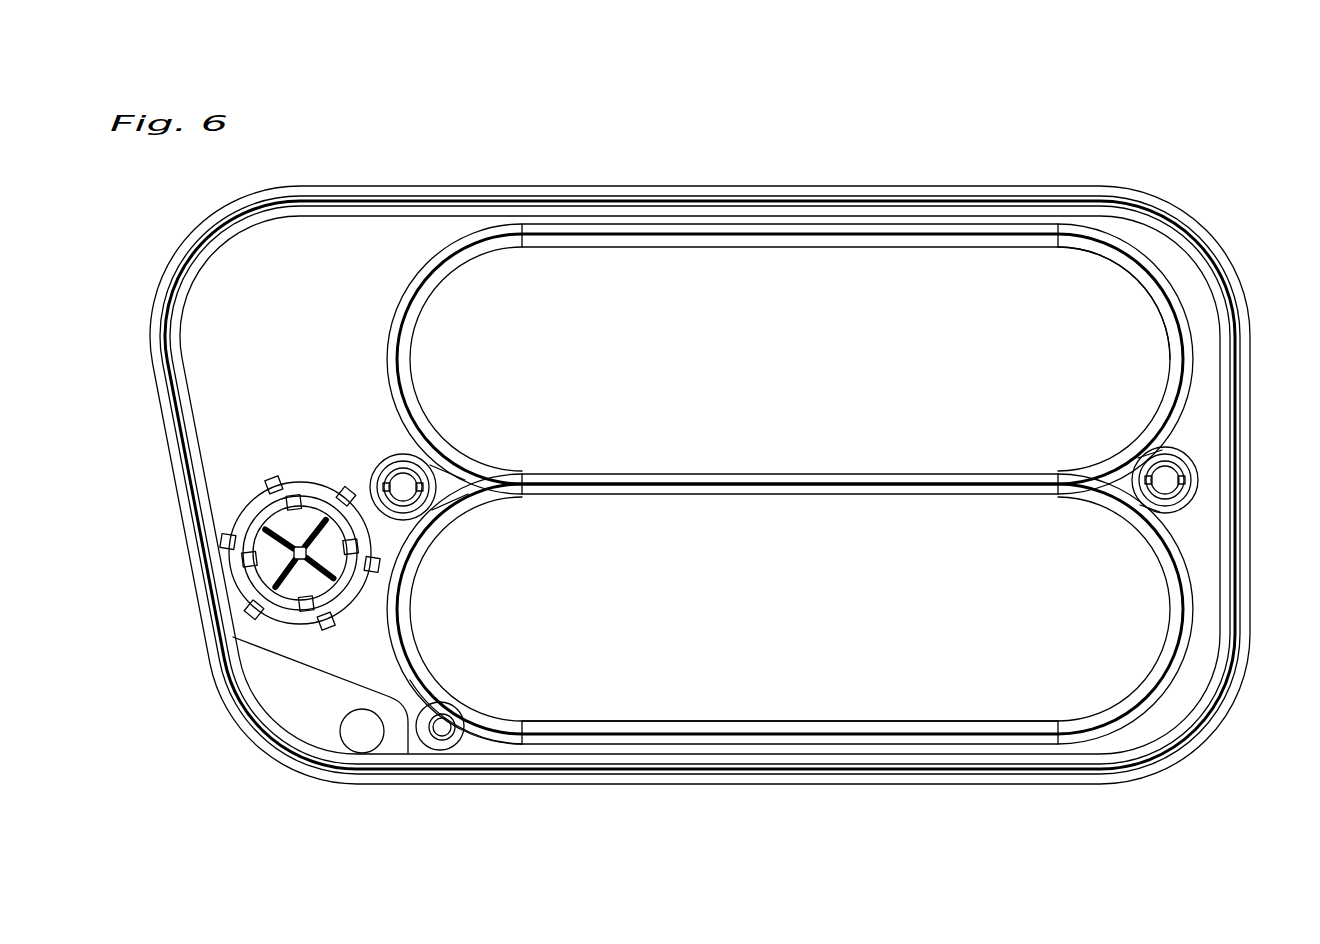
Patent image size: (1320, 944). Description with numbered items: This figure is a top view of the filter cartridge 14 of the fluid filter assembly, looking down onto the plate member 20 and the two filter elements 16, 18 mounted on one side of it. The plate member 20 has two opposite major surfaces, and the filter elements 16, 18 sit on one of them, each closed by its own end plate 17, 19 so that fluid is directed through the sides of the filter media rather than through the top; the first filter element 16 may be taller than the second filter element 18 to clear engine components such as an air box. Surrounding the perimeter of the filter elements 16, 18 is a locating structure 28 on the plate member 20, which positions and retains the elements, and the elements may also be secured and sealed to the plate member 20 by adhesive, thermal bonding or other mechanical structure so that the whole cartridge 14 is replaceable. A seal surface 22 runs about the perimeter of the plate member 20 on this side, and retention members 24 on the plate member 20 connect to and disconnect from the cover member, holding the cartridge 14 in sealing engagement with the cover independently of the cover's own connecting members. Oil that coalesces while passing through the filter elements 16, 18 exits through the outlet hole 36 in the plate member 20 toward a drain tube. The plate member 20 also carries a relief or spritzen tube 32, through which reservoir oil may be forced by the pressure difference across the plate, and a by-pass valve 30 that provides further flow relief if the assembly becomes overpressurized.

The filter cartridge 14 is at (678, 158).
The filter element 16 is at (997, 225).
The end plate 17 is at (1122, 283).
The filter element 18 is at (737, 737).
The end plate 19 is at (652, 700).
The plate member 20 is at (937, 190).
The seal surface 22 is at (855, 188).
The retention member 24 is at (384, 458).
The locating structure 28 is at (543, 742).
The by-pass valve 30 is at (245, 506).
The relief or spritzen tube 32 is at (442, 738).
The outlet hole 36 is at (358, 740).